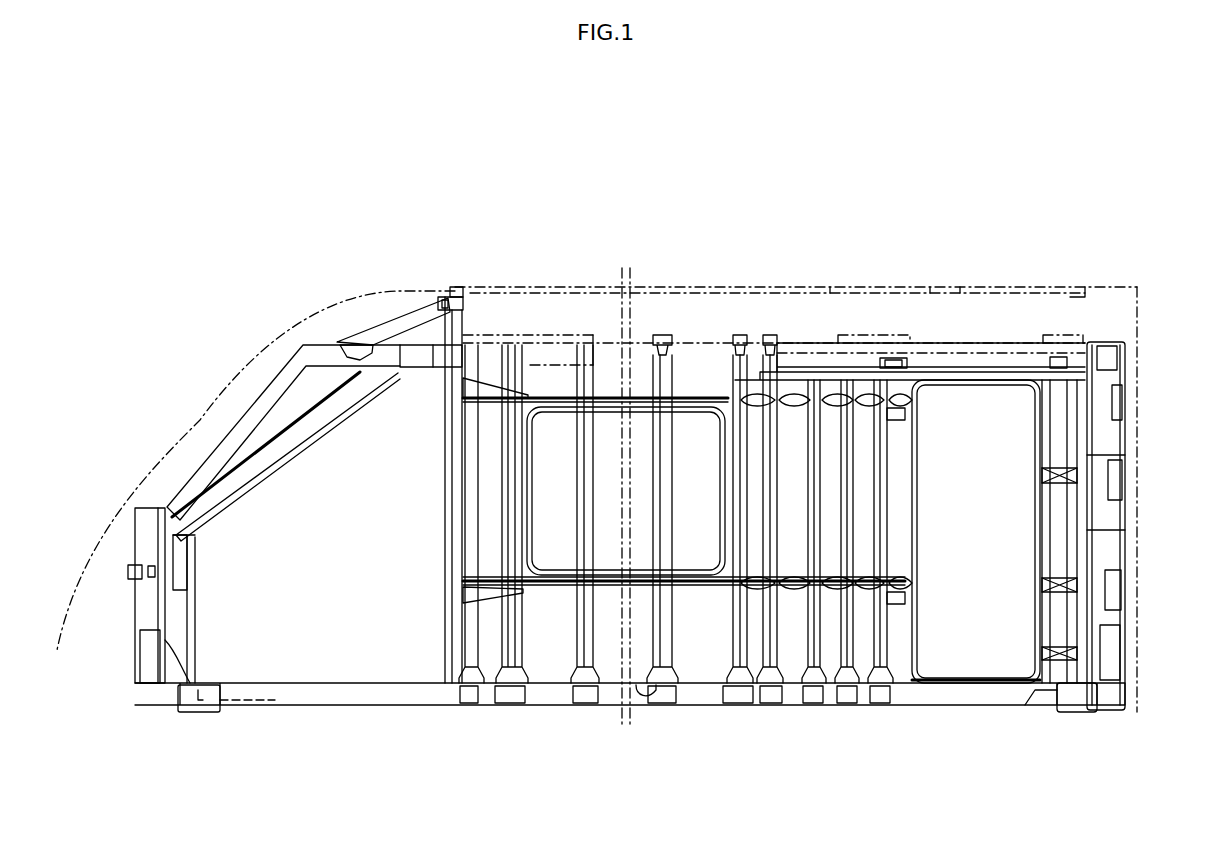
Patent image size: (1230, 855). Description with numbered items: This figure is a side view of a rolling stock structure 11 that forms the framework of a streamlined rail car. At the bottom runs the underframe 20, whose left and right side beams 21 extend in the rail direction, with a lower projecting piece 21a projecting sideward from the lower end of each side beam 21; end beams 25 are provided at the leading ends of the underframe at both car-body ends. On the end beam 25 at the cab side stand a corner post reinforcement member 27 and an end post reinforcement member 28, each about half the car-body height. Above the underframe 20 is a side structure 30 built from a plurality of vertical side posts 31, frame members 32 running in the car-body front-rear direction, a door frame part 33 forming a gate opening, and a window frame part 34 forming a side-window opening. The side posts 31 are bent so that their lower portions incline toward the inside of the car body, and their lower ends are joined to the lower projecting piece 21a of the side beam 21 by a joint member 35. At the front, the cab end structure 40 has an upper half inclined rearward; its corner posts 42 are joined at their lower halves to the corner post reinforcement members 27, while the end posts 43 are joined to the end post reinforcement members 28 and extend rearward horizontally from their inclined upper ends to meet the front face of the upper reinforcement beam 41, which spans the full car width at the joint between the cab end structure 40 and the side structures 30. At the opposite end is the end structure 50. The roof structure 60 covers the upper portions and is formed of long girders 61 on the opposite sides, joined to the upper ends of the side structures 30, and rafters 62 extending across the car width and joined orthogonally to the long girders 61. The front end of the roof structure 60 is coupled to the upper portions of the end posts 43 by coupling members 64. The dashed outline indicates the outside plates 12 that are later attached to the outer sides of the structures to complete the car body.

The rolling stock structure 11 is at (613, 182).
The outside plates 12 is at (306, 318).
The underframe 20 is at (630, 525).
The side beams 21 is at (548, 703).
The lower projecting piece 21a is at (656, 700).
The end beams 25 is at (178, 712).
The corner post reinforcement members 27 is at (190, 632).
The end post reinforcement members 28 is at (135, 618).
The side structures 30 is at (708, 341).
The side posts 31 is at (584, 630).
The frame members 32 is at (893, 410).
The door frame parts 33 is at (955, 680).
The window frame parts 34 is at (657, 573).
The joint member 35 is at (503, 703).
The cab end structure 40 is at (281, 396).
The upper reinforcement beam 41 is at (441, 358).
The corner posts 42 is at (268, 475).
The end posts 43 is at (175, 484).
The end structure 50 is at (1133, 392).
The roof structure 60 is at (929, 288).
The long girders 61 is at (820, 287).
The rafters 62 is at (788, 295).
The coupling members 64 is at (410, 317).